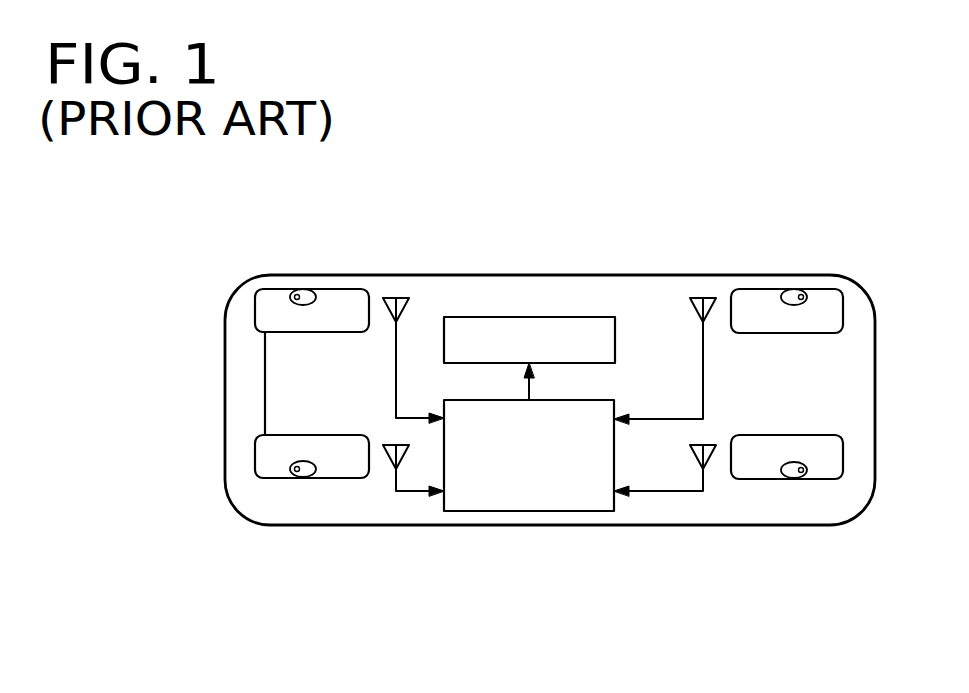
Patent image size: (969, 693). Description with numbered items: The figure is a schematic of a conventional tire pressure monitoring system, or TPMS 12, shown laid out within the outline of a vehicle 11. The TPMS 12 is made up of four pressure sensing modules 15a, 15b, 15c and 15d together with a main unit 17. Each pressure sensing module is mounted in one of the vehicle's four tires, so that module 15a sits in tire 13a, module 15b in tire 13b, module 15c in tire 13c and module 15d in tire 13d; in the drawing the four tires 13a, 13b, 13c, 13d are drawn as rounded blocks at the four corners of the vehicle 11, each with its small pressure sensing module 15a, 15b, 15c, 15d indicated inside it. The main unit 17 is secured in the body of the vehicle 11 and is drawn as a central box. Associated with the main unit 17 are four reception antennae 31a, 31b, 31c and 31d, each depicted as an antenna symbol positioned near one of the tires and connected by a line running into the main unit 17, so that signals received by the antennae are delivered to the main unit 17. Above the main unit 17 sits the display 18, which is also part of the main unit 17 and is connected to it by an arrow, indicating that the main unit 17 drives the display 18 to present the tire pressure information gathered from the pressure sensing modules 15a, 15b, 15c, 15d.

The vehicle 11 is at (583, 275).
The TPMS 12 is at (593, 537).
The tire 13a is at (345, 289).
The tire 13b is at (338, 478).
The tire 13c is at (762, 479).
The tire 13d is at (753, 289).
The pressure sensing module 15a is at (303, 289).
The pressure sensing module 15b is at (297, 478).
The pressure sensing module 15c is at (797, 479).
The pressure sensing module 15d is at (795, 289).
The main unit 17 is at (485, 511).
The display 18 is at (520, 316).
The reception antenna 31a is at (396, 298).
The reception antenna 31b is at (396, 445).
The reception antenna 31c is at (703, 445).
The reception antenna 31d is at (703, 298).